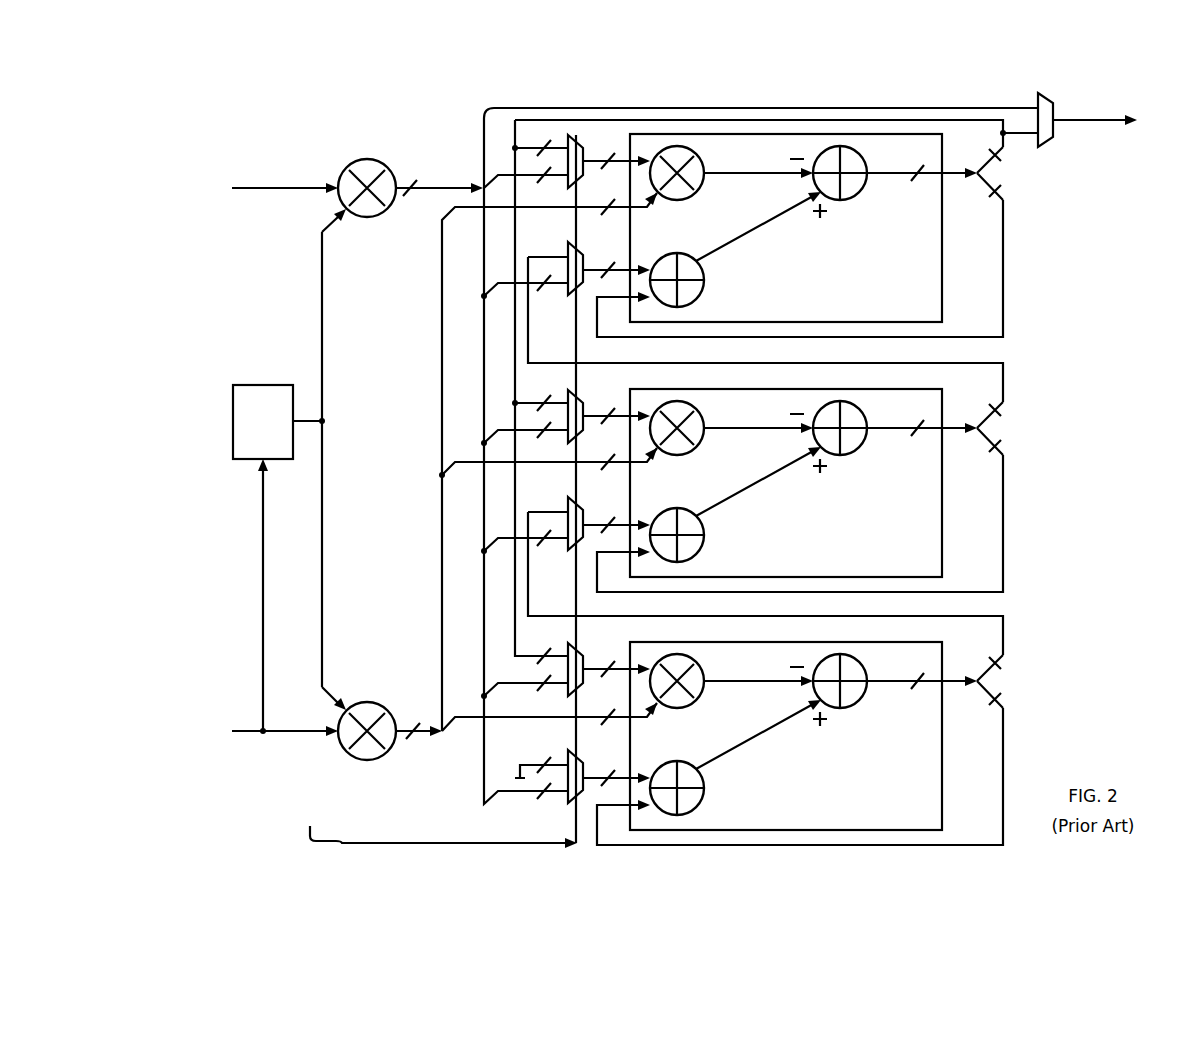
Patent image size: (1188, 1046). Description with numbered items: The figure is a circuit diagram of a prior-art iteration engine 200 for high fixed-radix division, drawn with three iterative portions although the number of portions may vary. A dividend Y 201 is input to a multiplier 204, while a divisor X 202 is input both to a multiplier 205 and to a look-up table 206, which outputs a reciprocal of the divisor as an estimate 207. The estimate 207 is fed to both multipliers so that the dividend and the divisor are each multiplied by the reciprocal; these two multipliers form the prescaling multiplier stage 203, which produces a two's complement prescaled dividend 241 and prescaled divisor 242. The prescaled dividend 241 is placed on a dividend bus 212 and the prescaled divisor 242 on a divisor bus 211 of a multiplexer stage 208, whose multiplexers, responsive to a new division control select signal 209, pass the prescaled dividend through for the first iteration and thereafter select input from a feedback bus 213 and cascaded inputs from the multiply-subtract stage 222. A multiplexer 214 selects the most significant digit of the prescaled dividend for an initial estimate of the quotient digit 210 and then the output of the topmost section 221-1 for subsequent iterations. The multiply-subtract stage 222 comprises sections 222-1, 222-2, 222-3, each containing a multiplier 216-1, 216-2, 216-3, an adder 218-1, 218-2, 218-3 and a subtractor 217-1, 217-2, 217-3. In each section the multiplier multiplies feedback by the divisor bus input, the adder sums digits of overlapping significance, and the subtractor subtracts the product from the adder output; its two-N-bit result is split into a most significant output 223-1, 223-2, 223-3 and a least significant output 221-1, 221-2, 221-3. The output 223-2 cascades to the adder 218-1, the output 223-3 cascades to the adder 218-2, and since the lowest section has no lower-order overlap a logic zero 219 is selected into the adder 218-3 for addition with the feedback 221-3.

The iteration engine 200 is at (170, 87).
The dividend Y 201 is at (232, 188).
The divisor X 202 is at (232, 731).
The prescaling multiplier stage 203 is at (300, 142).
The multiplier 204 is at (372, 220).
The multiplier 205 is at (343, 748).
The look-up table 206 is at (233, 432).
The estimate 207 is at (327, 432).
The multiplexer stage 208 is at (428, 87).
The new division control select signal 209 is at (331, 491).
The quotient digit 210 is at (1126, 128).
The divisor bus 211 is at (440, 597).
The dividend bus 212 is at (484, 772).
The feedback bus 213 is at (515, 357).
The multiplexer 214 is at (1053, 102).
The multiplier 216-1 is at (697, 195).
The multiplier 216-2 is at (723, 447).
The multiplier 216-3 is at (697, 700).
The subtractor 217-1 is at (850, 198).
The subtractor 217-2 is at (850, 453).
The subtractor 217-3 is at (850, 706).
The adder 218-1 is at (703, 296).
The adder 218-2 is at (703, 548).
The adder 218-3 is at (703, 796).
The logic 0 219 is at (518, 778).
The output 221-1 is at (840, 234).
The output 221-2 is at (805, 424).
The output 221-3 is at (806, 678).
The multiply-subtract stage 222 is at (1007, 87).
The section 222-1 is at (875, 320).
The section 222-2 is at (875, 575).
The section 222-3 is at (875, 828).
The output 223-1 is at (1002, 158).
The output 223-2 is at (1003, 388).
The output 223-3 is at (1003, 632).
The prescaled dividend 241 is at (403, 168).
The prescaled divisor 242 is at (410, 722).